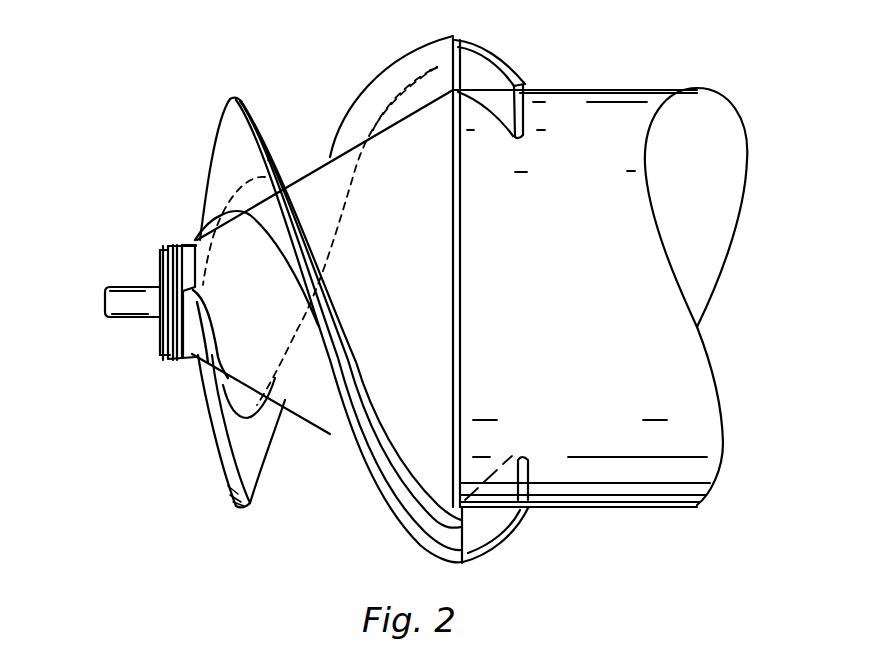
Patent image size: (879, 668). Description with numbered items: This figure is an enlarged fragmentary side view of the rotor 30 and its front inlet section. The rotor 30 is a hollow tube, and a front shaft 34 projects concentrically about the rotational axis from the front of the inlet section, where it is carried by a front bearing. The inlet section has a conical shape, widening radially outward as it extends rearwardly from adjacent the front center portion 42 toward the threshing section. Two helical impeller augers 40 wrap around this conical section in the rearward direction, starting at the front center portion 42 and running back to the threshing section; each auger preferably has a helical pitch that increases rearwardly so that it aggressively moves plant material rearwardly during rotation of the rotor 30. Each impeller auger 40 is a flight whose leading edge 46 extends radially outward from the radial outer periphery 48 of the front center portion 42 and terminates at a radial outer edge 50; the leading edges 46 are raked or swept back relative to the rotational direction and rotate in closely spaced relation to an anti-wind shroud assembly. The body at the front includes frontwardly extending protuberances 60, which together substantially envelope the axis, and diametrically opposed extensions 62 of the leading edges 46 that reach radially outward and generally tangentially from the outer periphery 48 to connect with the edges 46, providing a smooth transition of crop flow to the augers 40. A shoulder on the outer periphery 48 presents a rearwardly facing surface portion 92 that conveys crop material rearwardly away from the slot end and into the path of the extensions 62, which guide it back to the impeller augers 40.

The rotor 30 is at (670, 507).
The front shaft 34 is at (118, 318).
The helical impeller auger 40 is at (236, 99).
The front center portion 42 is at (264, 235).
The radial outer periphery 48 is at (189, 242).
The leading edge 46 is at (213, 449).
The radial outer edge 50 is at (270, 158).
The protuberance 60 is at (160, 252).
The extension 62 is at (200, 293).
The rearwardly facing surface portion 92 is at (172, 246).